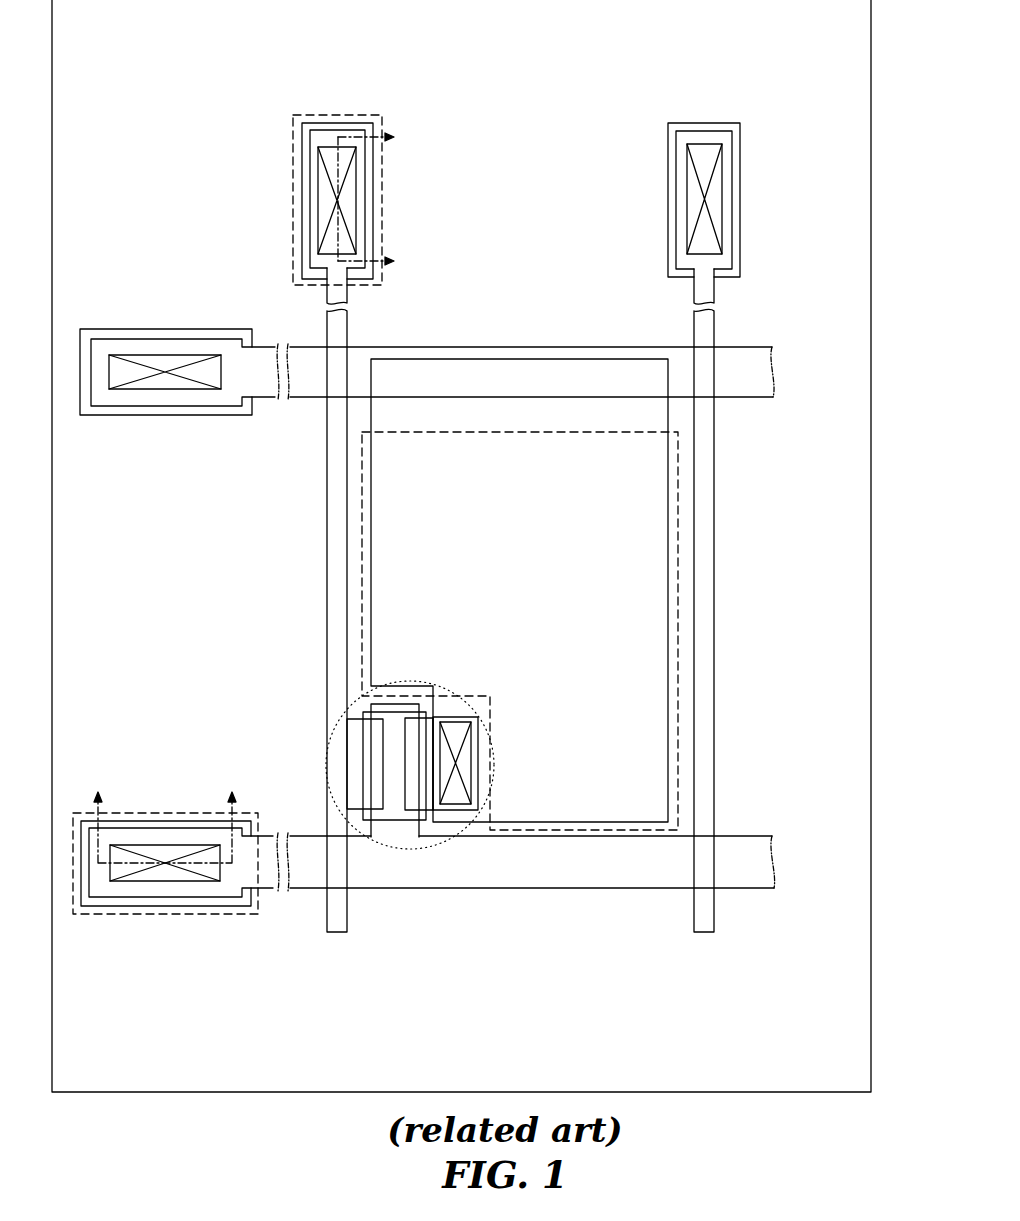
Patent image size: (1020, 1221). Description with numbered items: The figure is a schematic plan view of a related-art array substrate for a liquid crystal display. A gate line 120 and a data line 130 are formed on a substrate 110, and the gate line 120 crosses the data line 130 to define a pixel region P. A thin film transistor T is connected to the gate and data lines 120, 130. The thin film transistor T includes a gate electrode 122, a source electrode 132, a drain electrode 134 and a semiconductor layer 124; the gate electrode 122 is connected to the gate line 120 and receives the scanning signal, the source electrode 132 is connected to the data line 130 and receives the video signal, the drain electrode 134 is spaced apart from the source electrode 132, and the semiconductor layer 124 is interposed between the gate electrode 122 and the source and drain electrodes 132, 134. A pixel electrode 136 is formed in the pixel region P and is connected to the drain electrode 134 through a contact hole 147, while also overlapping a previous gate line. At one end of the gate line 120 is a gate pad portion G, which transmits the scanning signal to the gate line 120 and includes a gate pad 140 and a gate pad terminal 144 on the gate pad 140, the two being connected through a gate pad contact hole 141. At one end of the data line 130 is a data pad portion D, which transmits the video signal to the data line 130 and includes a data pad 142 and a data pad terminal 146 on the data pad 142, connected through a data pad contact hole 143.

The substrate 110 is at (871, 838).
The gate line 120 is at (637, 888).
The gate electrode 122 is at (397, 703).
The semiconductor layer 124 is at (384, 822).
The data line 130 is at (327, 543).
The source electrode 132 is at (347, 718).
The drain electrode 134 is at (455, 718).
The pixel electrode 136 is at (668, 668).
The gate pad 140 is at (167, 897).
The gate pad contact hole 141 is at (205, 881).
The data pad 142 is at (310, 178).
The data pad contact hole 143 is at (340, 128).
The gate pad terminal 144 is at (110, 906).
The data pad terminal 146 is at (293, 135).
The contact hole 147 is at (472, 765).
The thin film transistor T is at (428, 848).
The pixel region P is at (678, 612).
The gate pad portion G is at (173, 860).
The data pad portion D is at (329, 171).